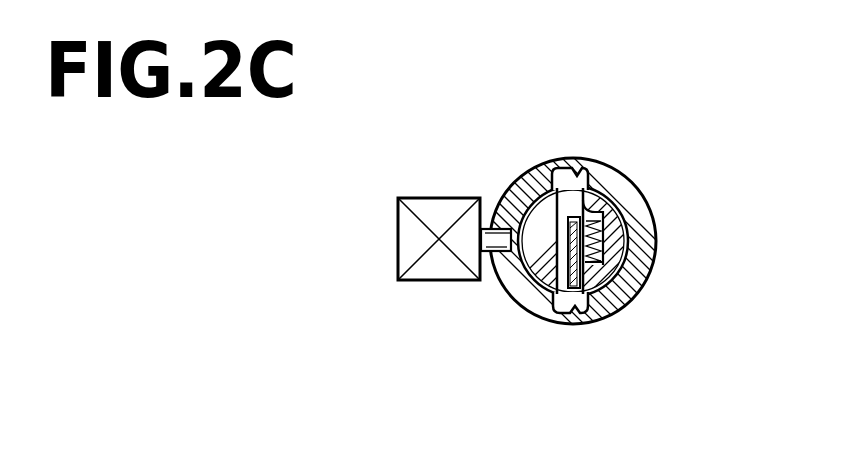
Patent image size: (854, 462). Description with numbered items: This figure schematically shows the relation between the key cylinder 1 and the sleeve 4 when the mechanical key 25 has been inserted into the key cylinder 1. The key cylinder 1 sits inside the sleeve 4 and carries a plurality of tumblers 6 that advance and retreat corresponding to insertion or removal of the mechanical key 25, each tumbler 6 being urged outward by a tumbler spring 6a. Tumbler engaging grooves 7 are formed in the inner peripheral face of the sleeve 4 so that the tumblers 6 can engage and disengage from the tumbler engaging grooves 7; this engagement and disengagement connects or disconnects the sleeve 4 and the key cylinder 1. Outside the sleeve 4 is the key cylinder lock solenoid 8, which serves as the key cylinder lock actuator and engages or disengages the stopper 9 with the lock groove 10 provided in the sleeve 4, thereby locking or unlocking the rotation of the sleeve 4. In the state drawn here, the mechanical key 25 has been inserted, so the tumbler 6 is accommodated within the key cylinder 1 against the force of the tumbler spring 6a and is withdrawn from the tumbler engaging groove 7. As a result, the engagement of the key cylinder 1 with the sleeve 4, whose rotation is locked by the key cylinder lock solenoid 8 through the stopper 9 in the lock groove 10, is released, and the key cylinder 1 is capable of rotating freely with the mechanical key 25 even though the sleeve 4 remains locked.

The key cylinder 1 is at (530, 257).
The sleeve 4 is at (655, 206).
The tumbler 6 is at (636, 288).
The tumbler spring 6a is at (632, 251).
The tumbler engaging groove 7 is at (589, 166).
The key cylinder lock solenoid 8 is at (398, 239).
The stopper 9 is at (496, 228).
The lock groove 10 is at (490, 255).
The mechanical key 25 is at (568, 289).